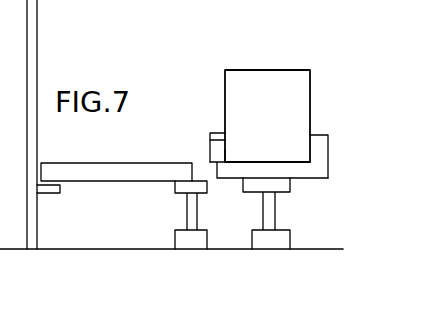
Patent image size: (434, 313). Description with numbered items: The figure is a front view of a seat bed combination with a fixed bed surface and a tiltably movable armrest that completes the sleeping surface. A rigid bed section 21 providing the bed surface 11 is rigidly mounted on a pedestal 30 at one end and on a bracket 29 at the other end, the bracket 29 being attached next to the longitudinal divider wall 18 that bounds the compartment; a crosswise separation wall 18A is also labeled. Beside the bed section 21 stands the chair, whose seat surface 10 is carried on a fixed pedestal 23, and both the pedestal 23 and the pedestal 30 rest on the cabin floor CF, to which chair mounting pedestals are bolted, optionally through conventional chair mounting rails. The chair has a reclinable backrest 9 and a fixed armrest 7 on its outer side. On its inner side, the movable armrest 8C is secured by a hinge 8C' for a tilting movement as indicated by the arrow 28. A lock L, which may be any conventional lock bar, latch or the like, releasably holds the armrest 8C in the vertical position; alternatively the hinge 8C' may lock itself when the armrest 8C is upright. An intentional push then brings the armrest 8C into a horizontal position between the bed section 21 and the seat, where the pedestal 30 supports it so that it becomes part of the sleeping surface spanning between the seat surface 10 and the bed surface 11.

The longitudinal divider wall 18 is at (30, 33).
The crosswise separation wall 18A is at (172, 69).
The backrest 9 is at (268, 88).
The lock L is at (245, 93).
The movable armrest 8C is at (200, 126).
The hinge 8C' is at (249, 140).
The arrow 28 is at (200, 138).
The fixed armrest 7 is at (318, 148).
The seat surface 10 is at (268, 160).
The bed surface 11 is at (116, 171).
The bed section 21 is at (133, 172).
The bracket 29 is at (52, 194).
The pedestal 30 is at (188, 210).
The pedestal 23 is at (268, 210).
The cabin floor CF is at (299, 251).